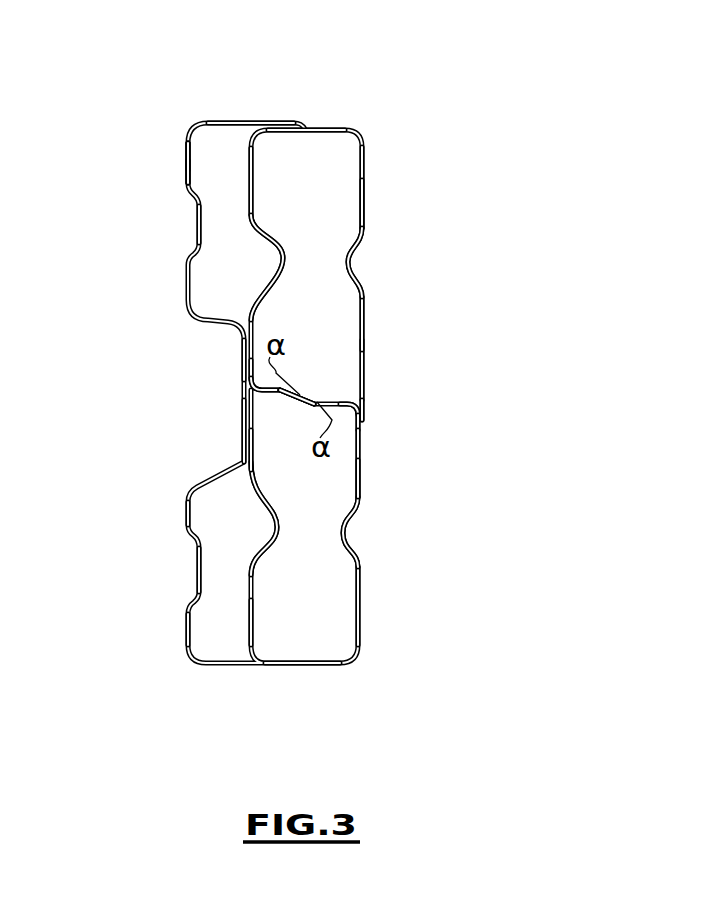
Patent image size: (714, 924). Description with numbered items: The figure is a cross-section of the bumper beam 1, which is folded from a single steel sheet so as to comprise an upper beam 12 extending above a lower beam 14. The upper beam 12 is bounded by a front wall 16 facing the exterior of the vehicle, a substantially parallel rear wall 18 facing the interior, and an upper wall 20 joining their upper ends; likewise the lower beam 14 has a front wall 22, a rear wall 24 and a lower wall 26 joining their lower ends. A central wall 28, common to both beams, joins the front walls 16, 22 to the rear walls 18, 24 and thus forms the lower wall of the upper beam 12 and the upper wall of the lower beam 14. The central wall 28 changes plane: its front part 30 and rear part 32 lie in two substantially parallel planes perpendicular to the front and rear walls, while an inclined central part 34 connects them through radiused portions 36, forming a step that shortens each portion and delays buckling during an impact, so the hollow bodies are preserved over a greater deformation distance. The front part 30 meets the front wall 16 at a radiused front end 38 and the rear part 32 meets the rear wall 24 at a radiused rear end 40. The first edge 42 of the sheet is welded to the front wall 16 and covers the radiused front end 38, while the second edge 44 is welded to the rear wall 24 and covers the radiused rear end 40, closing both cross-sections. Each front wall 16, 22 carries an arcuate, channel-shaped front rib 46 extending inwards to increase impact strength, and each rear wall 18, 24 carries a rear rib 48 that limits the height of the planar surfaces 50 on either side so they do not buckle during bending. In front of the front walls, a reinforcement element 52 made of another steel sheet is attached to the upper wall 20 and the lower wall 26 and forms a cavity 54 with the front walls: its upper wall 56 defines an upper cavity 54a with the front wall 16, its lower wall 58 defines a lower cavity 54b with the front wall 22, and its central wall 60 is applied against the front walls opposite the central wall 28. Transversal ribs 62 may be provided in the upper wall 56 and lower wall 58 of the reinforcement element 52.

The bumper beam 1 is at (458, 158).
The upper beam 12 is at (238, 123).
The lower beam 14 is at (245, 612).
The front wall 16 is at (247, 198).
The rear wall 18 is at (364, 205).
The upper wall 20 is at (302, 123).
The front wall 22 is at (250, 470).
The rear wall 24 is at (361, 490).
The lower wall 26 is at (290, 667).
The central wall 28 is at (290, 385).
The front part 30 is at (272, 392).
The rear part 32 is at (363, 363).
The central part 34 is at (300, 395).
The radiused portions 36 is at (319, 402).
The radiused front end 38 is at (250, 400).
The radiused rear end 40 is at (352, 400).
The first edge 42 is at (246, 372).
The second edge 44 is at (362, 423).
The front rib 46 is at (281, 263).
The rear rib 48 is at (350, 262).
The planar surfaces 50 is at (365, 172).
The reinforcement element 52 is at (187, 151).
The cavity 54 is at (218, 148).
The upper cavity 54a is at (228, 218).
The lower cavity 54b is at (220, 578).
The upper wall 56 is at (187, 171).
The lower wall 58 is at (188, 612).
The central wall 60 is at (242, 435).
The ribs 62 is at (199, 214).